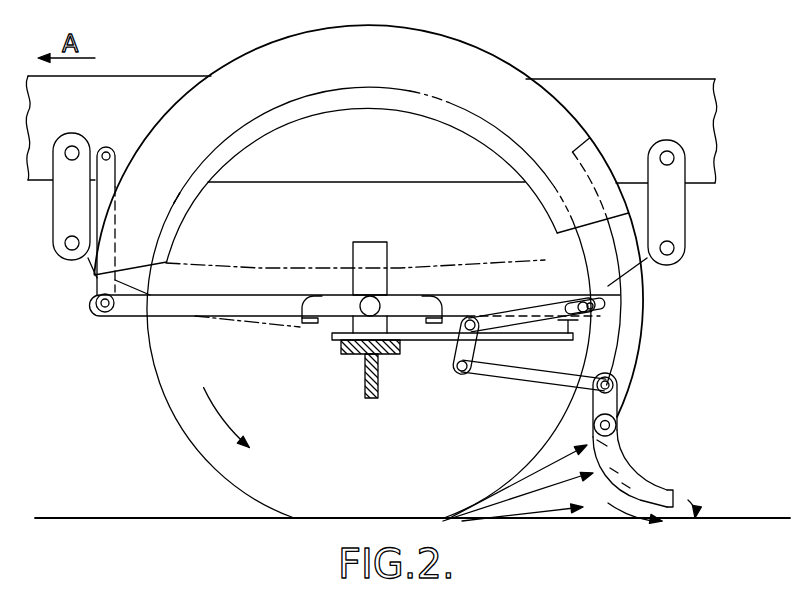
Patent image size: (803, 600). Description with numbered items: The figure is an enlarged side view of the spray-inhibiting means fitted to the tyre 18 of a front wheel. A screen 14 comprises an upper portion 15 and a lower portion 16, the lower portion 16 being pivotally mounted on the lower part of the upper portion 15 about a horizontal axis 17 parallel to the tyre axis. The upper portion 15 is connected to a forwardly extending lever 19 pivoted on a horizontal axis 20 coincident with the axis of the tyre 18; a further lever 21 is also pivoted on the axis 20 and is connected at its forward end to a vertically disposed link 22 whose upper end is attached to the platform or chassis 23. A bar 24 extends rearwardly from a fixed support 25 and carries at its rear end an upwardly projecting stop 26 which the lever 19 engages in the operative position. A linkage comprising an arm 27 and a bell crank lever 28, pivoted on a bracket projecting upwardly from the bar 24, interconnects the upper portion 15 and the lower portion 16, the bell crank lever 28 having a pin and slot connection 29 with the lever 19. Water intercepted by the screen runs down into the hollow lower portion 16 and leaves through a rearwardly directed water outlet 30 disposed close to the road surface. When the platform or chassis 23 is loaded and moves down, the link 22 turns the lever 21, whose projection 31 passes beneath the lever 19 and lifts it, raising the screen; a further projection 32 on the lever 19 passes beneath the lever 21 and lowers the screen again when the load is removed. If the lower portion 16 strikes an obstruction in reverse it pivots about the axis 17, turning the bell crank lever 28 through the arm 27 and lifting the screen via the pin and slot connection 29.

The screen 14 is at (652, 307).
The upper portion 15 is at (628, 340).
The lower portion 16 is at (636, 490).
The horizontal axis 17 is at (617, 426).
The tyre 18 is at (163, 395).
The lever 19 is at (497, 305).
The horizontal axis 20 is at (364, 300).
The further lever 21 is at (190, 305).
The vertically disposed link 22 is at (100, 288).
The platform or chassis 23 is at (148, 93).
The bar 24 is at (427, 341).
The fixed support 25 is at (365, 356).
The stop 26 is at (562, 334).
The arm 27 is at (525, 375).
The bell crank lever 28 is at (466, 372).
The pin and slot connection 29 is at (581, 302).
The water outlet 30 is at (678, 500).
The projection 31 is at (430, 300).
The further projection 32 is at (308, 322).